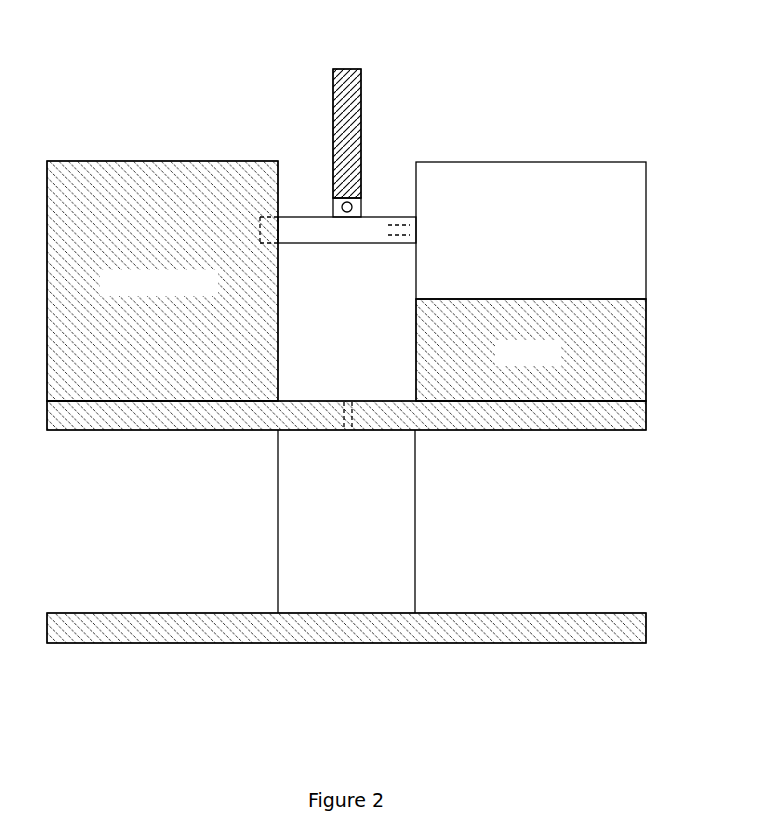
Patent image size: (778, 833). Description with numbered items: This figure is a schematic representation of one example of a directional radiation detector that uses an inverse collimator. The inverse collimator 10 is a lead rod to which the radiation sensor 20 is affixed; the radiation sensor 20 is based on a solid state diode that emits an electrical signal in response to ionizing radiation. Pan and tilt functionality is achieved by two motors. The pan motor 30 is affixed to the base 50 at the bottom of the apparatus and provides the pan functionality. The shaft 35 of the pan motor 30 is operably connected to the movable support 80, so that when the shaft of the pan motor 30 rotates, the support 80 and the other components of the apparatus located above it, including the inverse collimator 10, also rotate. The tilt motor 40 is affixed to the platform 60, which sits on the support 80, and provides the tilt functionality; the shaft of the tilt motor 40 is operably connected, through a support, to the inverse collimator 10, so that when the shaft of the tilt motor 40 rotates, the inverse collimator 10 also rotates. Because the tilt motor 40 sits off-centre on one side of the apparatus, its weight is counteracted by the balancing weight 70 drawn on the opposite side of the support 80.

The inverse collimator 10 is at (360, 85).
The radiation sensor 20 is at (358, 193).
The pan motor 30 is at (346, 521).
The shaft 35 is at (345, 408).
The tilt motor 40 is at (531, 230).
The base 50 is at (466, 620).
The platform 60 is at (531, 350).
The balancing weight 70 is at (162, 281).
The movable support 80 is at (637, 419).